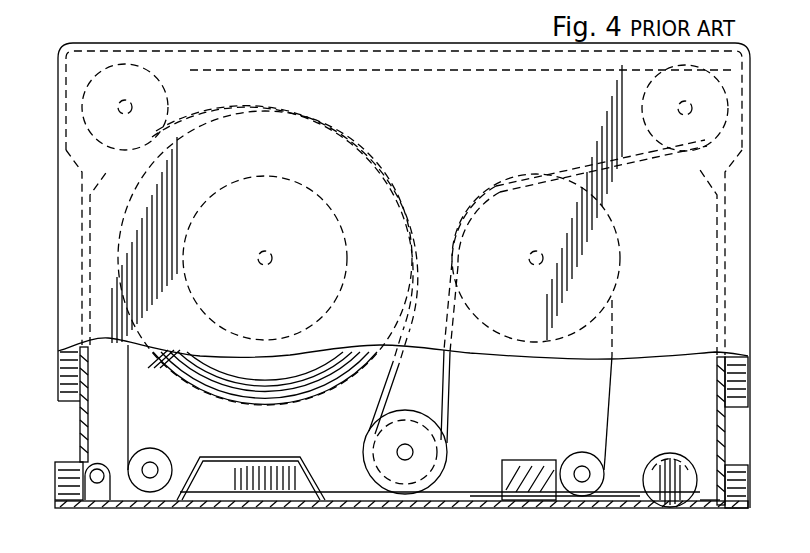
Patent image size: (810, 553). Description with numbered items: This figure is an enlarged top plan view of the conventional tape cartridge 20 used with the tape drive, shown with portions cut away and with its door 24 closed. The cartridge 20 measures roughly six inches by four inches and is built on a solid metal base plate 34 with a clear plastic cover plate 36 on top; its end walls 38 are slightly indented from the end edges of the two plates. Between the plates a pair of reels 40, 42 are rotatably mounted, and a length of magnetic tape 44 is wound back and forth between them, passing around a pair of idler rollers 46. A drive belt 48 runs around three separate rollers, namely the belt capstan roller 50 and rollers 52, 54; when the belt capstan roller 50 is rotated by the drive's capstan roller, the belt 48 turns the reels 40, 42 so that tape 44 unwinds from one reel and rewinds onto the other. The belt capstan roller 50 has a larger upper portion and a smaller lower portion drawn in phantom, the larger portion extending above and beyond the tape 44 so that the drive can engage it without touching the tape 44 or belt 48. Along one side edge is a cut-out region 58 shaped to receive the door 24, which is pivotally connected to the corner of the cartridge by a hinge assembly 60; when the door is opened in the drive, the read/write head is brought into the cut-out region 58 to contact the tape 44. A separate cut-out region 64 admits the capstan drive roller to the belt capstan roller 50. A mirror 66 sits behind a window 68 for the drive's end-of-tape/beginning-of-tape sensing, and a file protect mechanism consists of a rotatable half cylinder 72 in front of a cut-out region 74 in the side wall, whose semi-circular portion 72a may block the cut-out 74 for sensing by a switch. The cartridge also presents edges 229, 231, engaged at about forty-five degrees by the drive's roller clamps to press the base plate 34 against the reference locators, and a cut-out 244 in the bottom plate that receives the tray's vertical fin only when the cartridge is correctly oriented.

The tape cartridge 20 is at (175, 55).
The door 24 is at (290, 506).
The base plate 34 is at (740, 492).
The cover plate 36 is at (680, 354).
The end walls 38 is at (148, 168).
The reel 40 is at (345, 268).
The reel 42 is at (586, 342).
The magnetic tape 44 is at (608, 396).
The idler rollers 46 is at (150, 466).
The drive belt 48 is at (452, 368).
The belt capstan roller 50 is at (368, 447).
The roller 52 is at (170, 107).
The roller 54 is at (702, 150).
The cut-out region 58 is at (300, 462).
The hinge assembly 60 is at (98, 468).
The cut-out region 64 is at (452, 505).
The mirror 66 is at (512, 460).
The window 68 is at (535, 506).
The rotatable half cylinder 72 is at (666, 506).
The semi-circular portion 72a is at (656, 456).
The cut-out region 74 is at (684, 506).
The edge 229 is at (66, 462).
The edge 231 is at (740, 466).
The cut-out 244 is at (718, 420).